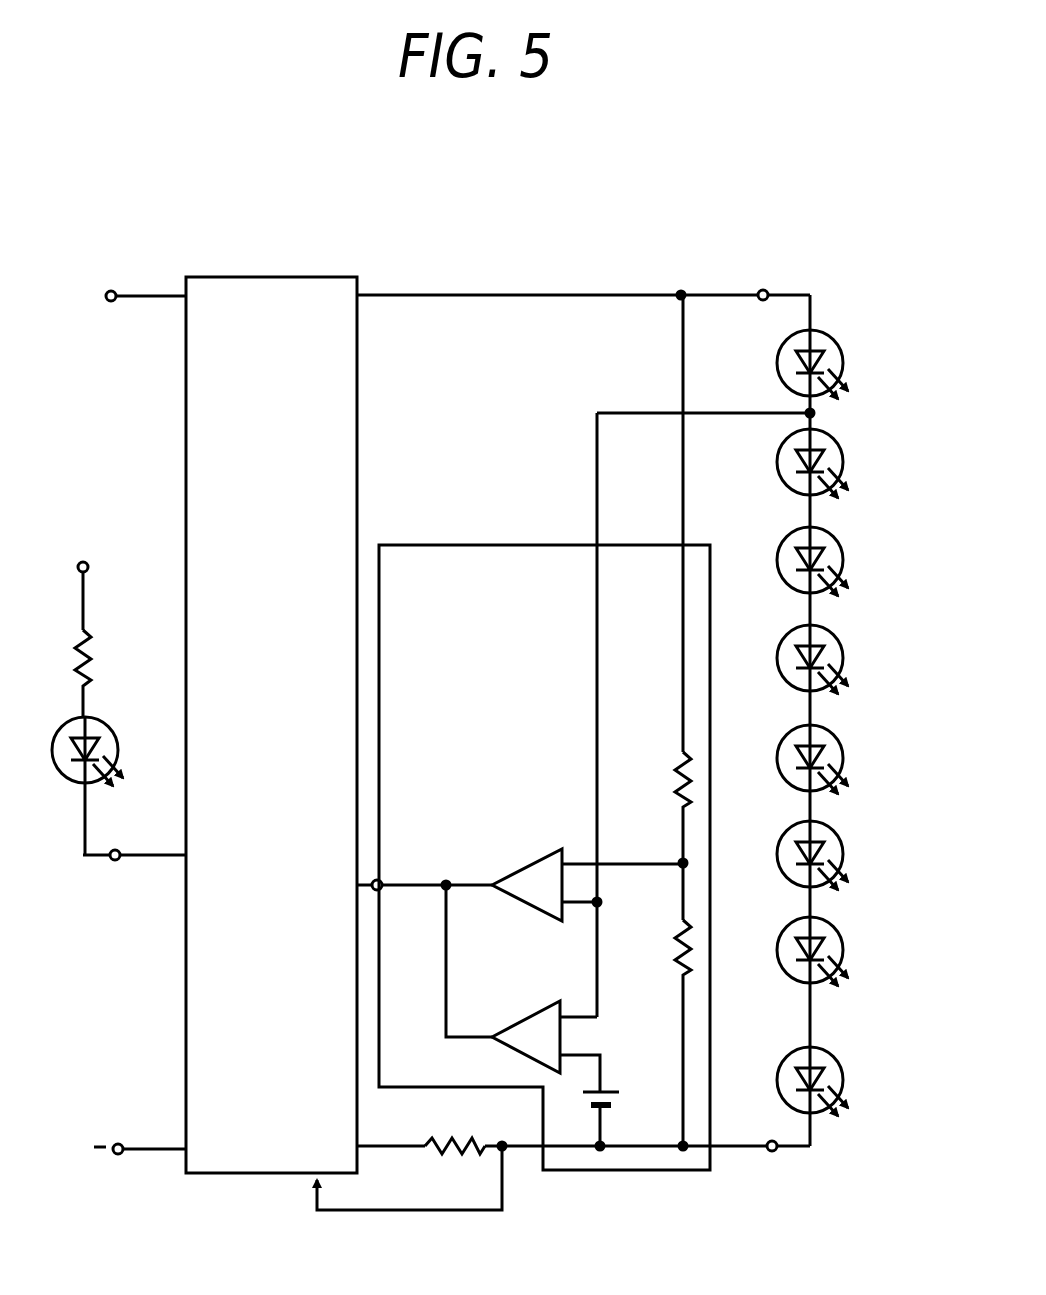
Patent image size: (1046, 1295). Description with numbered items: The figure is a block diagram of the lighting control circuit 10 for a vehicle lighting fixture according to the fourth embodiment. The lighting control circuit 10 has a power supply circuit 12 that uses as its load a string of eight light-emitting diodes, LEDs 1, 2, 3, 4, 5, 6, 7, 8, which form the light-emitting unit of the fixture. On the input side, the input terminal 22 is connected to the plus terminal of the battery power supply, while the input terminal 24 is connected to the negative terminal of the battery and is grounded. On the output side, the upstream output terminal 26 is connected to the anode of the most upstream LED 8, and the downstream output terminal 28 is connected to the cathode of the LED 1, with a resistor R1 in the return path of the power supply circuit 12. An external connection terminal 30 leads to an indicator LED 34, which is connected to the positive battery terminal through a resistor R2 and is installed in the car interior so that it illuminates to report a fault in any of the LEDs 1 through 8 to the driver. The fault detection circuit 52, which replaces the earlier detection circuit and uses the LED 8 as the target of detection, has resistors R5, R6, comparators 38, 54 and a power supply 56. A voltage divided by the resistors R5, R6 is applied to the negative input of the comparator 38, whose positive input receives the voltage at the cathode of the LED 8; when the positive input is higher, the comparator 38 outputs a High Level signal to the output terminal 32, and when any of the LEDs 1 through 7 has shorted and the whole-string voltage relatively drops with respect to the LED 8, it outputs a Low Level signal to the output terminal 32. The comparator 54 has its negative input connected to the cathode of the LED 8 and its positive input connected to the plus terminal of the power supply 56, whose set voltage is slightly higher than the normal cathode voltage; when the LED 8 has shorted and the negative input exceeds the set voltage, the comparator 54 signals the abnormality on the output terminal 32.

The lighting control circuit 10 is at (497, 245).
The power supply circuit 12 is at (213, 277).
The input terminal 22 is at (110, 291).
The input terminal 24 is at (118, 1155).
The output terminal 26 is at (767, 290).
The output terminal 28 is at (772, 1152).
The external connection terminal 30 is at (114, 862).
The output terminal 32 is at (380, 880).
The LED 34 is at (68, 780).
The comparator 38 is at (521, 860).
The fault detection circuit 52 is at (485, 545).
The comparator 54 is at (526, 1010).
The power supply 56 is at (612, 1092).
The resistor R1 is at (455, 1127).
The resistor R2 is at (104, 639).
The resistor R5 is at (661, 581).
The resistor R6 is at (661, 1004).
The LED 1 is at (836, 1058).
The LED 2 is at (836, 928).
The LED 3 is at (836, 832).
The LED 4 is at (836, 736).
The LED 5 is at (836, 636).
The LED 6 is at (836, 538).
The LED 7 is at (836, 440).
The LED 8 is at (836, 341).